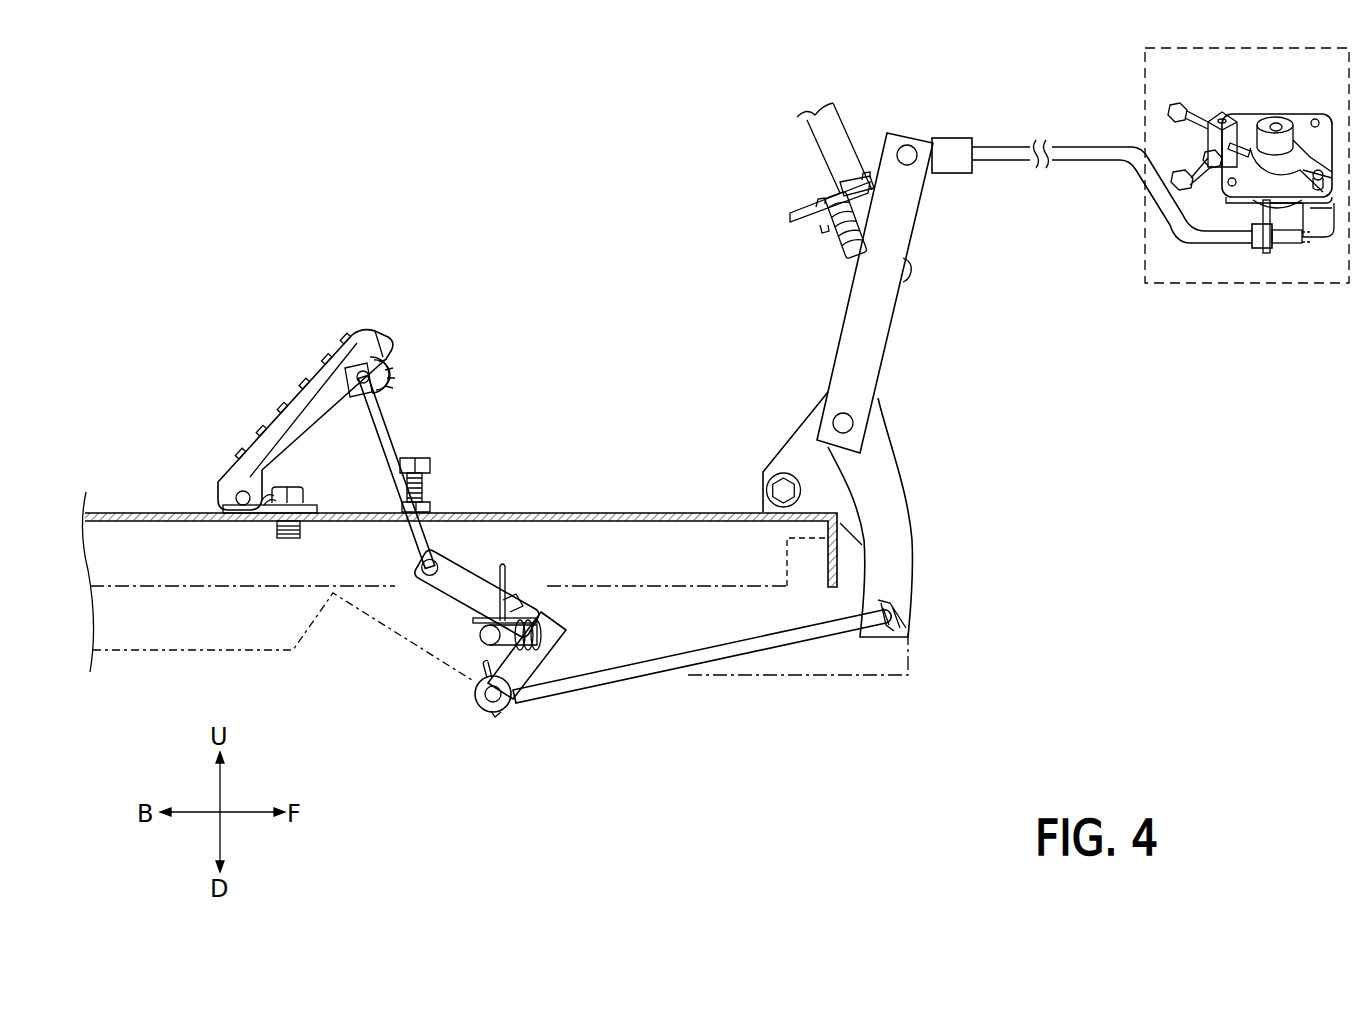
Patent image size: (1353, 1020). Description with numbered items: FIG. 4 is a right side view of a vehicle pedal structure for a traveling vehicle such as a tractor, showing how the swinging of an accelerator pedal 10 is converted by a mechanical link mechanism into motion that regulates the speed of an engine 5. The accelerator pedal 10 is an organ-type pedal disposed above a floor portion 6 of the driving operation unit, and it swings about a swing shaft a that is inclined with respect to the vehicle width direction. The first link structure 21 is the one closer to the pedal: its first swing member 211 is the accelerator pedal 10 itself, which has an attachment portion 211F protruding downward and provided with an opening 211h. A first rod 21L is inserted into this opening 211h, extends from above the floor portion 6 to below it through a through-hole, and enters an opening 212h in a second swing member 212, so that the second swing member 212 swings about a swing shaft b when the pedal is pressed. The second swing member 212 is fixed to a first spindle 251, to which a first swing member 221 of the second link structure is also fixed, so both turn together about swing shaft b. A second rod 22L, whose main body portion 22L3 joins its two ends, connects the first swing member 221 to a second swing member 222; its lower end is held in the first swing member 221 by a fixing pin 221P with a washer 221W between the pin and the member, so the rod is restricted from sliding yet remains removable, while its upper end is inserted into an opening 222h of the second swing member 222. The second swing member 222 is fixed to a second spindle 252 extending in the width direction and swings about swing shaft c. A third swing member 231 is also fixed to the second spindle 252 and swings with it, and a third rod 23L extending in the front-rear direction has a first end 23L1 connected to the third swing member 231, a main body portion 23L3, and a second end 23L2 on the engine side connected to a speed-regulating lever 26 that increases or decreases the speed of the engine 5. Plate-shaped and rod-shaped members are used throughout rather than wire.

The floor portion 6 is at (157, 512).
The first link structure 21 is at (351, 429).
The accelerator pedal 10 is at (295, 434).
The first swing member 211 is at (282, 428).
The attachment portion 211F is at (393, 356).
The opening 211h is at (422, 380).
The first rod 21L is at (350, 470).
The main body portion 22L3 is at (590, 577).
The second rod 22L is at (560, 688).
The second swing member 212 is at (509, 581).
The opening 212h is at (436, 558).
The first spindle 251 is at (482, 636).
The first swing member 221 is at (519, 699).
The washer 221W is at (477, 700).
The fixing pin 221P is at (506, 712).
The second swing member 222 is at (891, 514).
The opening 222h is at (908, 628).
The second spindle 252 is at (848, 420).
The third swing member 231 is at (880, 310).
The first end 23L1 is at (980, 141).
The main body portion 23L3 is at (1085, 147).
The third rod 23L is at (1146, 212).
The second end 23L2 is at (1285, 250).
The engine 5 is at (1247, 203).
The speed-regulating lever 26 is at (1300, 163).